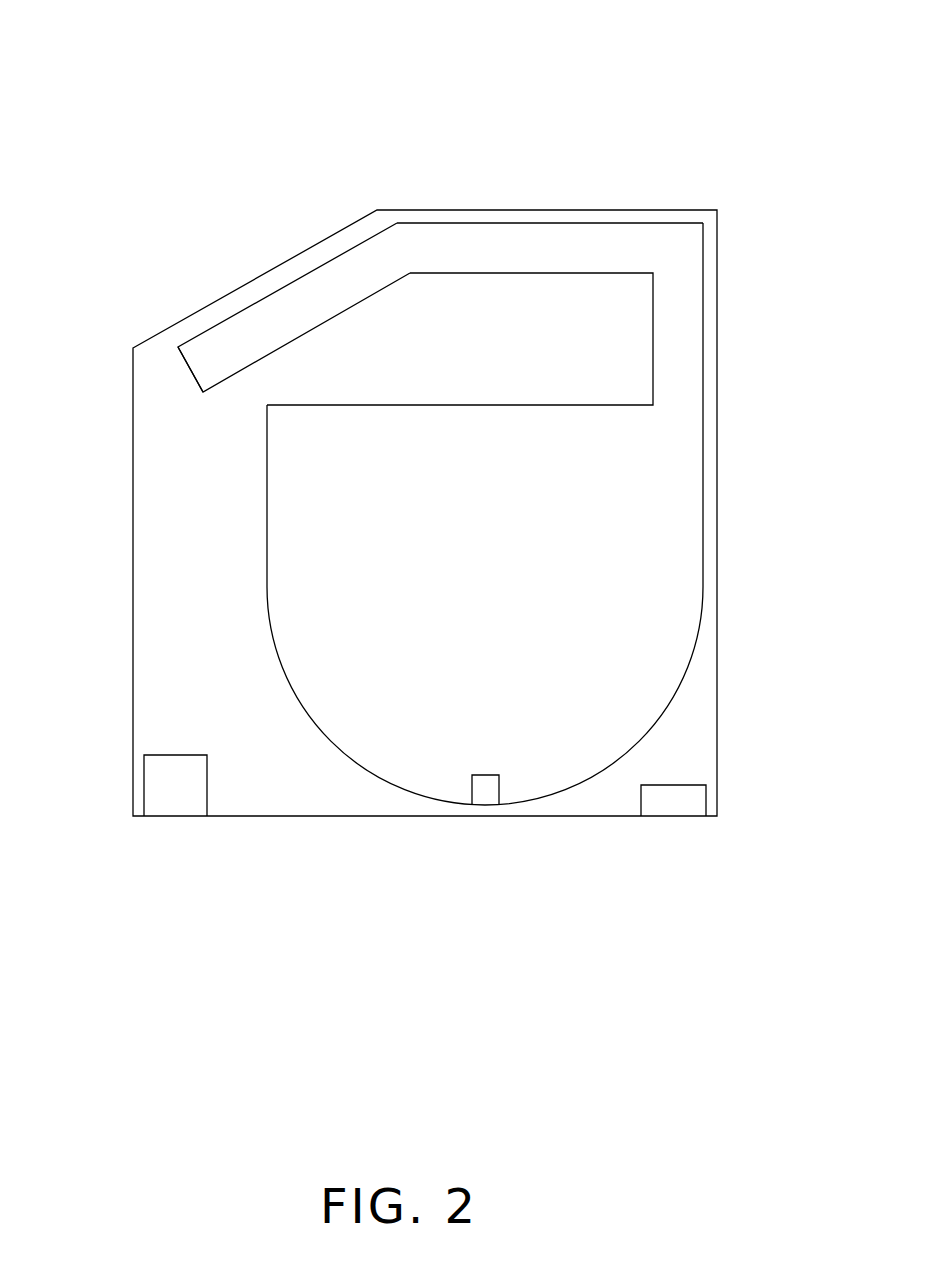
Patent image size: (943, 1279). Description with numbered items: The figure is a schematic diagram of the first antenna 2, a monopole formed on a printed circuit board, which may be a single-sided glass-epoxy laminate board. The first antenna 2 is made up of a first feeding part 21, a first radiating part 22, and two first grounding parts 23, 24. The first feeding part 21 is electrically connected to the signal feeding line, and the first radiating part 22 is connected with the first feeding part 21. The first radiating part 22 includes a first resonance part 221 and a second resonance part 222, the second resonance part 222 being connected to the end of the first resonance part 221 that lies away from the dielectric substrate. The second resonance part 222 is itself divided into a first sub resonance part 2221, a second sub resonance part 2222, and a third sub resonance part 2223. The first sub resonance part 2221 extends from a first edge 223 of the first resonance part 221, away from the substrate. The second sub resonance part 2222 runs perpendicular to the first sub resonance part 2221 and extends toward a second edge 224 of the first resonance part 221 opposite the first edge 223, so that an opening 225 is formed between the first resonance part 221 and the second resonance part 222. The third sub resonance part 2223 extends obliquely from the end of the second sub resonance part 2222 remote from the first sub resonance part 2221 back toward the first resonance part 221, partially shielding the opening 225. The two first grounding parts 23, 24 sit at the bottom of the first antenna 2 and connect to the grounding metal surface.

The first antenna 2 is at (436, 21).
The first feeding part 21 is at (487, 806).
The first radiating part 22 is at (786, 101).
The first resonance part 221 is at (650, 547).
The second resonance part 222 is at (703, 150).
The first sub resonance part 2221 is at (690, 333).
The second sub resonance part 2222 is at (538, 238).
The third sub resonance part 2223 is at (365, 252).
The first edge 223 is at (705, 542).
The second edge 224 is at (256, 483).
The opening 225 is at (272, 380).
The first grounding part 23 is at (153, 784).
The first grounding part 24 is at (700, 802).